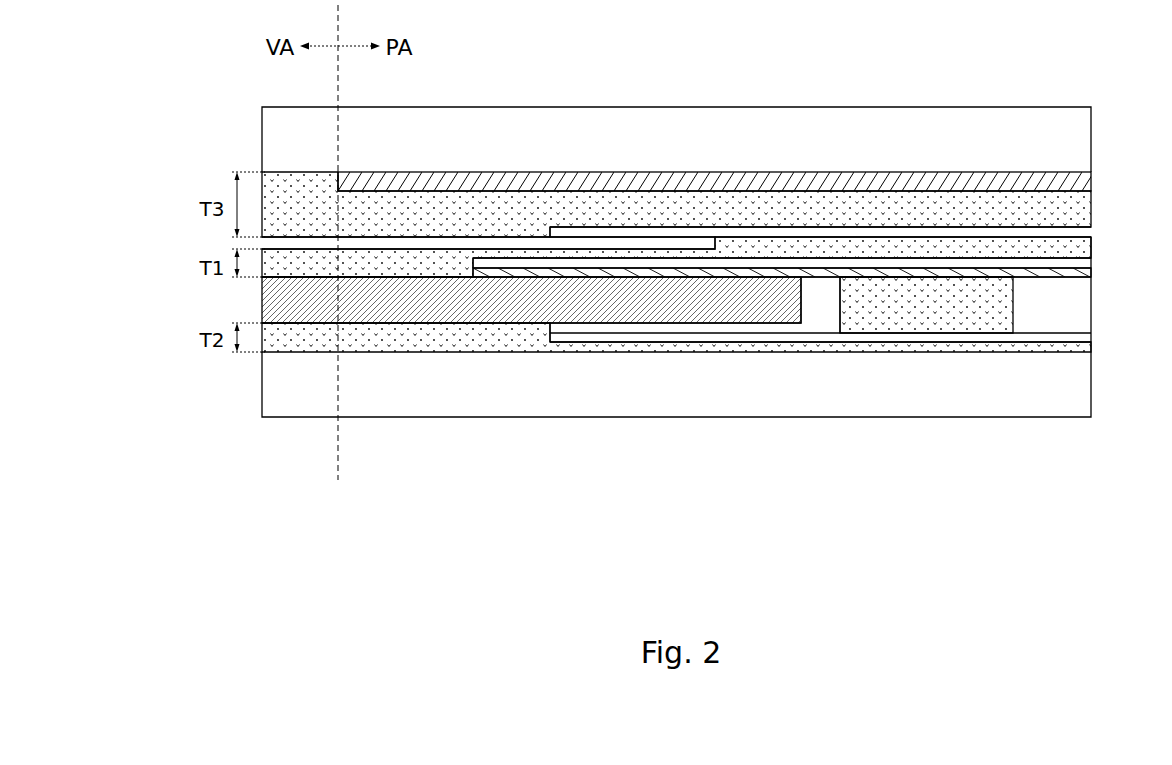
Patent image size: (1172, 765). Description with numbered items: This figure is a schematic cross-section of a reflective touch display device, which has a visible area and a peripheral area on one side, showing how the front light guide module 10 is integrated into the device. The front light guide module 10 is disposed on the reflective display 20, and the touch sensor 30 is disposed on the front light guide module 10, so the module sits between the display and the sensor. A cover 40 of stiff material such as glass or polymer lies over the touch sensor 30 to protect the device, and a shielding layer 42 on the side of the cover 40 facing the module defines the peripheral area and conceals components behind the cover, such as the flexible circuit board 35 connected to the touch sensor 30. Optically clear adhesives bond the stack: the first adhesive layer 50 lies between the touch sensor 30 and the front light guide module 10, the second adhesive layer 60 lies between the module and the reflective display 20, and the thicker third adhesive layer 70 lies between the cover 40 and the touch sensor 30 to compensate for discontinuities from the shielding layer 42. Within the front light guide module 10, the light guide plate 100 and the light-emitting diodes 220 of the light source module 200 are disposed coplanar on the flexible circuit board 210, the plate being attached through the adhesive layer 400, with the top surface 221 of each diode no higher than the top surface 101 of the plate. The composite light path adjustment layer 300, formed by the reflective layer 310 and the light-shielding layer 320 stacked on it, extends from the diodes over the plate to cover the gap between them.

The front light guide module 10 is at (1095, 258).
The reflective display 20 is at (1088, 383).
The touch sensor 30 is at (583, 243).
The flexible circuit board 35 is at (647, 232).
The cover 40 is at (1088, 142).
The shielding layer 42 is at (1088, 180).
The first adhesive layer 50 is at (272, 290).
The second adhesive layer 60 is at (293, 338).
The third adhesive layer 70 is at (297, 192).
The light guide plate 100 is at (492, 324).
The top surface 101 is at (448, 280).
The light source module 200 is at (820, 395).
The flexible circuit board 210 is at (1028, 337).
The light-emitting diodes 220 is at (933, 324).
The top surface 221 is at (869, 280).
The composite light path adjustment layer 300 is at (782, 385).
The reflective layer 310 is at (690, 271).
The light-shielding layer 320 is at (605, 264).
The adhesive layer 400 is at (768, 331).